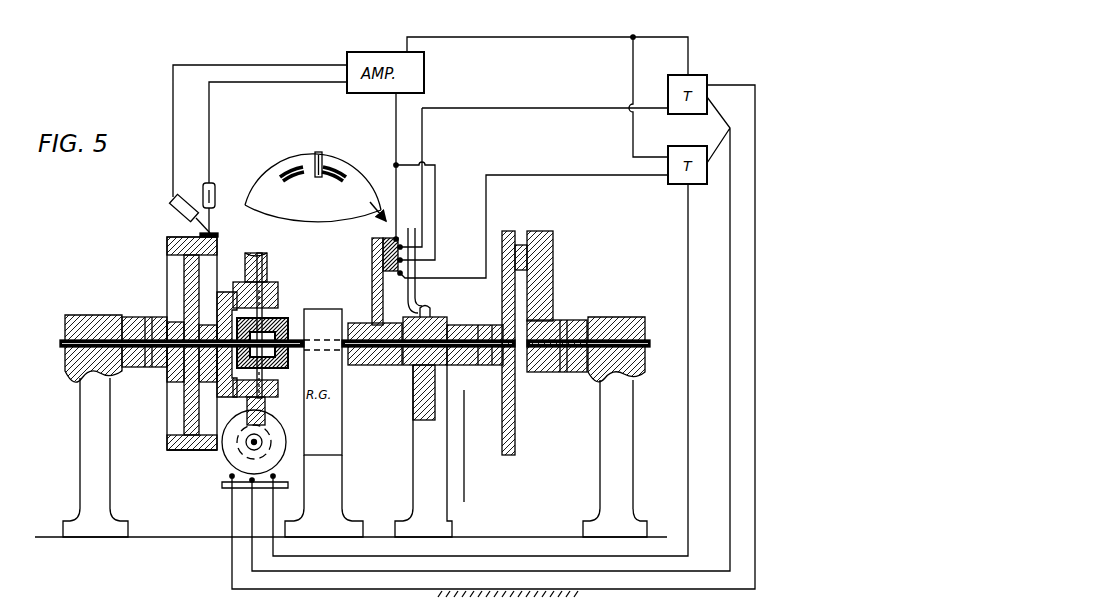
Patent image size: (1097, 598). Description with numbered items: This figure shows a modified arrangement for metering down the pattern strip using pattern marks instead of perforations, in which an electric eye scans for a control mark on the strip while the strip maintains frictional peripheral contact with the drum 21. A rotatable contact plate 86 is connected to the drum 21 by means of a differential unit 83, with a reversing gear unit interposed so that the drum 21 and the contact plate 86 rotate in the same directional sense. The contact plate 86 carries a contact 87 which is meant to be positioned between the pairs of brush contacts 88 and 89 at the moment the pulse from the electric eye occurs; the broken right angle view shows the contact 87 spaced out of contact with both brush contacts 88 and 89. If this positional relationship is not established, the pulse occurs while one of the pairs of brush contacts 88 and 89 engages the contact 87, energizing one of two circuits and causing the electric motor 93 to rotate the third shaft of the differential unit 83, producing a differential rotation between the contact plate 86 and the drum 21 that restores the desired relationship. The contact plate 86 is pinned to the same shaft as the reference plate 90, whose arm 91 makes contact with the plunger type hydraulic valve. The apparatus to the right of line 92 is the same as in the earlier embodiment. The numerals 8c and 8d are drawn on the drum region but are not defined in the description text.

The drum 21 is at (172, 284).
The drum lower flange 8c is at (196, 452).
The drum top reflective surface 8d is at (218, 237).
The differential unit 83 is at (283, 316).
The contact plate 86 is at (372, 261).
The contact 87 is at (318, 151).
The brush contacts 88 is at (292, 172).
The brush contacts 89 is at (343, 172).
The reference plate 90 is at (516, 440).
The arm 91 is at (553, 246).
The line 92 is at (467, 487).
The electric motor 93 is at (230, 458).